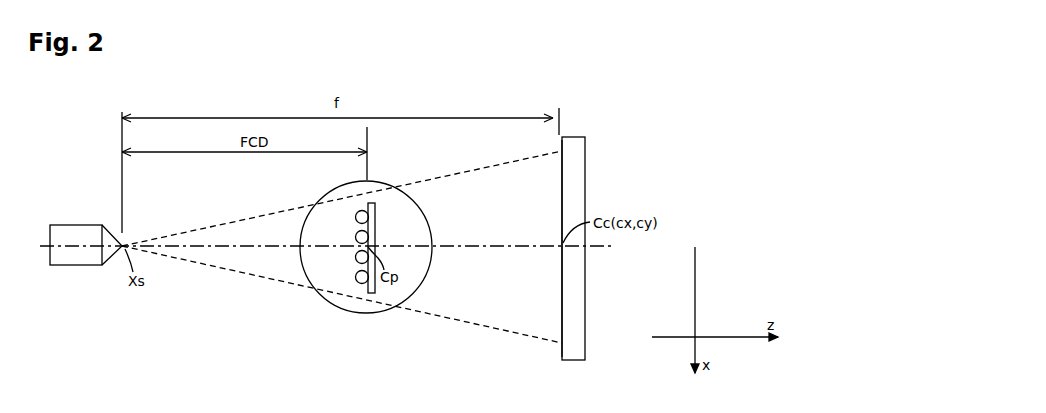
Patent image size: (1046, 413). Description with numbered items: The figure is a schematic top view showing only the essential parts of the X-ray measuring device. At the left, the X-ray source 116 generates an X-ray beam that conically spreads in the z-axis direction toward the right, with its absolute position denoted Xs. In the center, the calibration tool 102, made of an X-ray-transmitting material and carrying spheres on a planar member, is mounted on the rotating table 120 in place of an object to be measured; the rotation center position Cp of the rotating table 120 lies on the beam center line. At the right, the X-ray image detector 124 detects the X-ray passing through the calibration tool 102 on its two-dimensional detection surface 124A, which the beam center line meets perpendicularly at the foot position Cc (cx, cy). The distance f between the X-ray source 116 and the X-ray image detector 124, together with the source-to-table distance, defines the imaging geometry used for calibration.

The X-ray source 116 is at (82, 228).
The calibration tool 102 is at (377, 209).
The rotating table 120 is at (345, 306).
The X-ray image detector 124 is at (566, 352).
The two-dimensional detection surface 124A is at (562, 177).